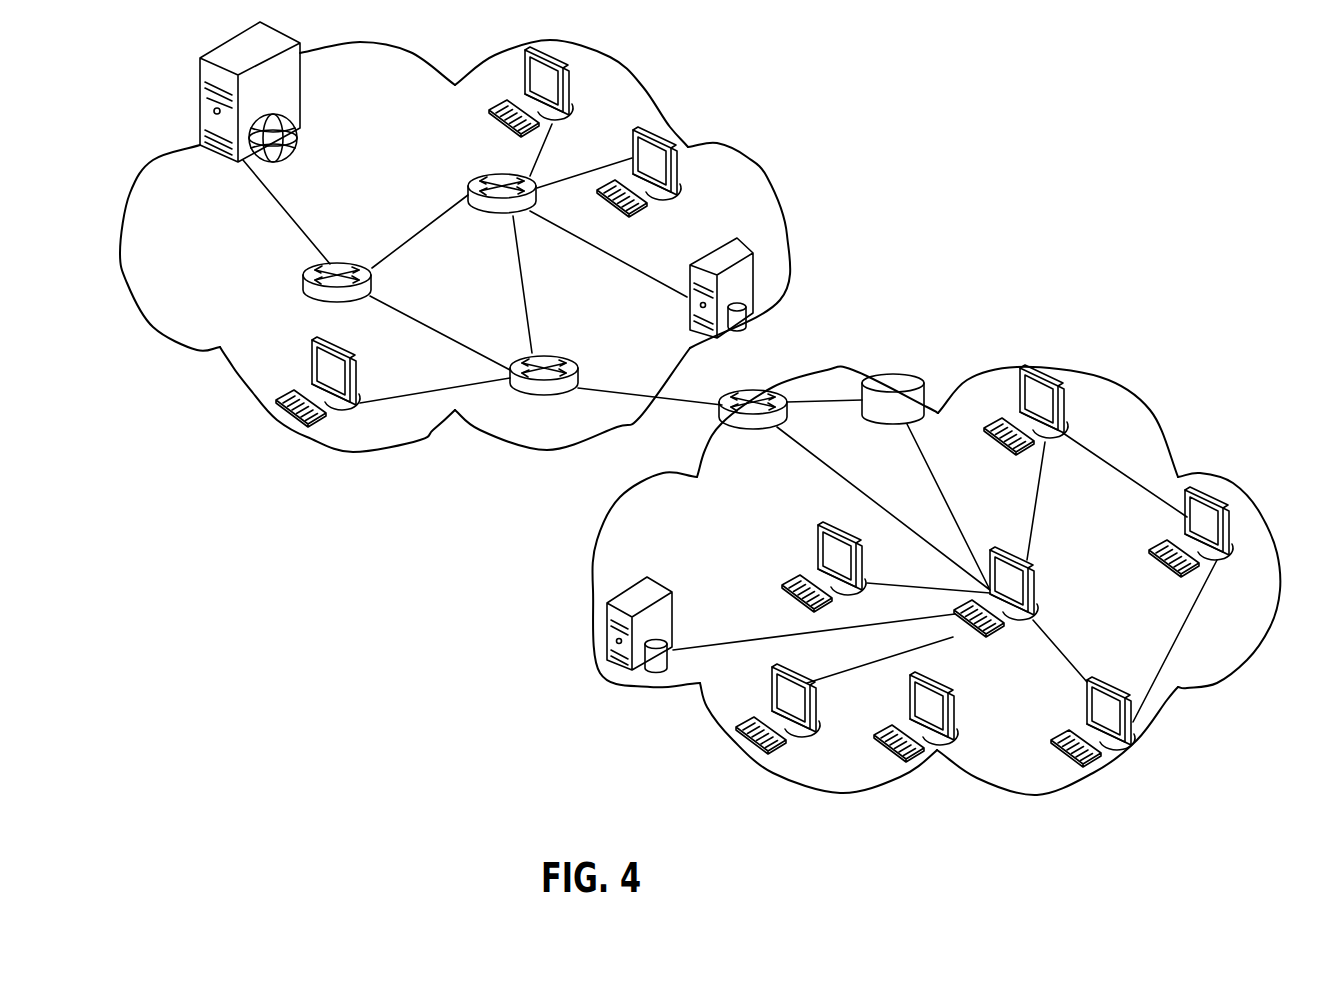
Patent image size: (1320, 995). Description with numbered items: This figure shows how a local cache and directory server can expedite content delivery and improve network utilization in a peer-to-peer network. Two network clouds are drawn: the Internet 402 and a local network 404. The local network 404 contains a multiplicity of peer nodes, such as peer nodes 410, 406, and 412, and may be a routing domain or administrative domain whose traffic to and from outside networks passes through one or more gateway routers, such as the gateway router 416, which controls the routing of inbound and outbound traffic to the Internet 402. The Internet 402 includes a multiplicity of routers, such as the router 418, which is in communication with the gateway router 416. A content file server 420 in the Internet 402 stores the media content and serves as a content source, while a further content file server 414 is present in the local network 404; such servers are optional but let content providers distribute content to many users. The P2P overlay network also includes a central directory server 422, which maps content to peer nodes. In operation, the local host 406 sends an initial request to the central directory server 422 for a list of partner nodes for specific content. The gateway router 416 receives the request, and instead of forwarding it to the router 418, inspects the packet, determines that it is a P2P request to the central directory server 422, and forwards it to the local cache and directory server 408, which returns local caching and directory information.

The Internet 402 is at (455, 246).
The local network 404 is at (936, 581).
The peer node 406 is at (1033, 615).
The local cache and directory server 408 is at (903, 373).
The peer node 410 is at (1067, 433).
The peer node 412 is at (1127, 703).
The content file server 414 is at (620, 672).
The gateway router 416 is at (755, 388).
The router 418 is at (532, 398).
The content file server 420 is at (716, 243).
The central directory server 422 is at (205, 56).